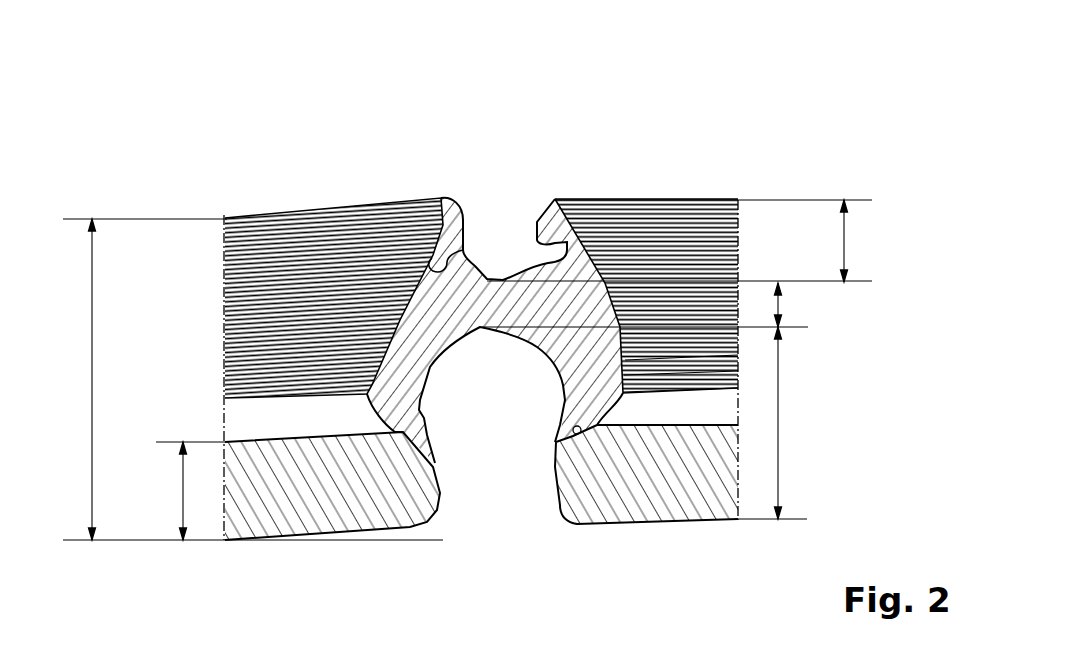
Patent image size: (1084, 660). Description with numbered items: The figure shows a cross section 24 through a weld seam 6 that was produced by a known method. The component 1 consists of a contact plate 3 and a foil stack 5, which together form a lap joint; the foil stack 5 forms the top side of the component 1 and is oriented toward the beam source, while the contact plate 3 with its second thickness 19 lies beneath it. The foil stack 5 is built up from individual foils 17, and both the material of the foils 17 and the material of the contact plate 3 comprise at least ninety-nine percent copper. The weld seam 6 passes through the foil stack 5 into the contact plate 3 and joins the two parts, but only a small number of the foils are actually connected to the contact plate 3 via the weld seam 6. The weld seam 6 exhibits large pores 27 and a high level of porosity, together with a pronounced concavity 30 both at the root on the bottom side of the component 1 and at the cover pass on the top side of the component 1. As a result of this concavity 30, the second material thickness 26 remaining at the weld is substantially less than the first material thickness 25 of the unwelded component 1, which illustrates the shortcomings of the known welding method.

The component 1 is at (741, 108).
The contact plate 3 is at (668, 480).
The foil stack 5 is at (207, 220).
The weld seam 6 is at (573, 312).
The foil 17 is at (680, 297).
The second thickness 19 is at (182, 493).
The cross section 24 is at (801, 144).
The first material thickness 25 is at (93, 388).
The second material thickness 26 is at (781, 305).
The large pores 27 is at (432, 262).
The concavity 30 is at (846, 238).